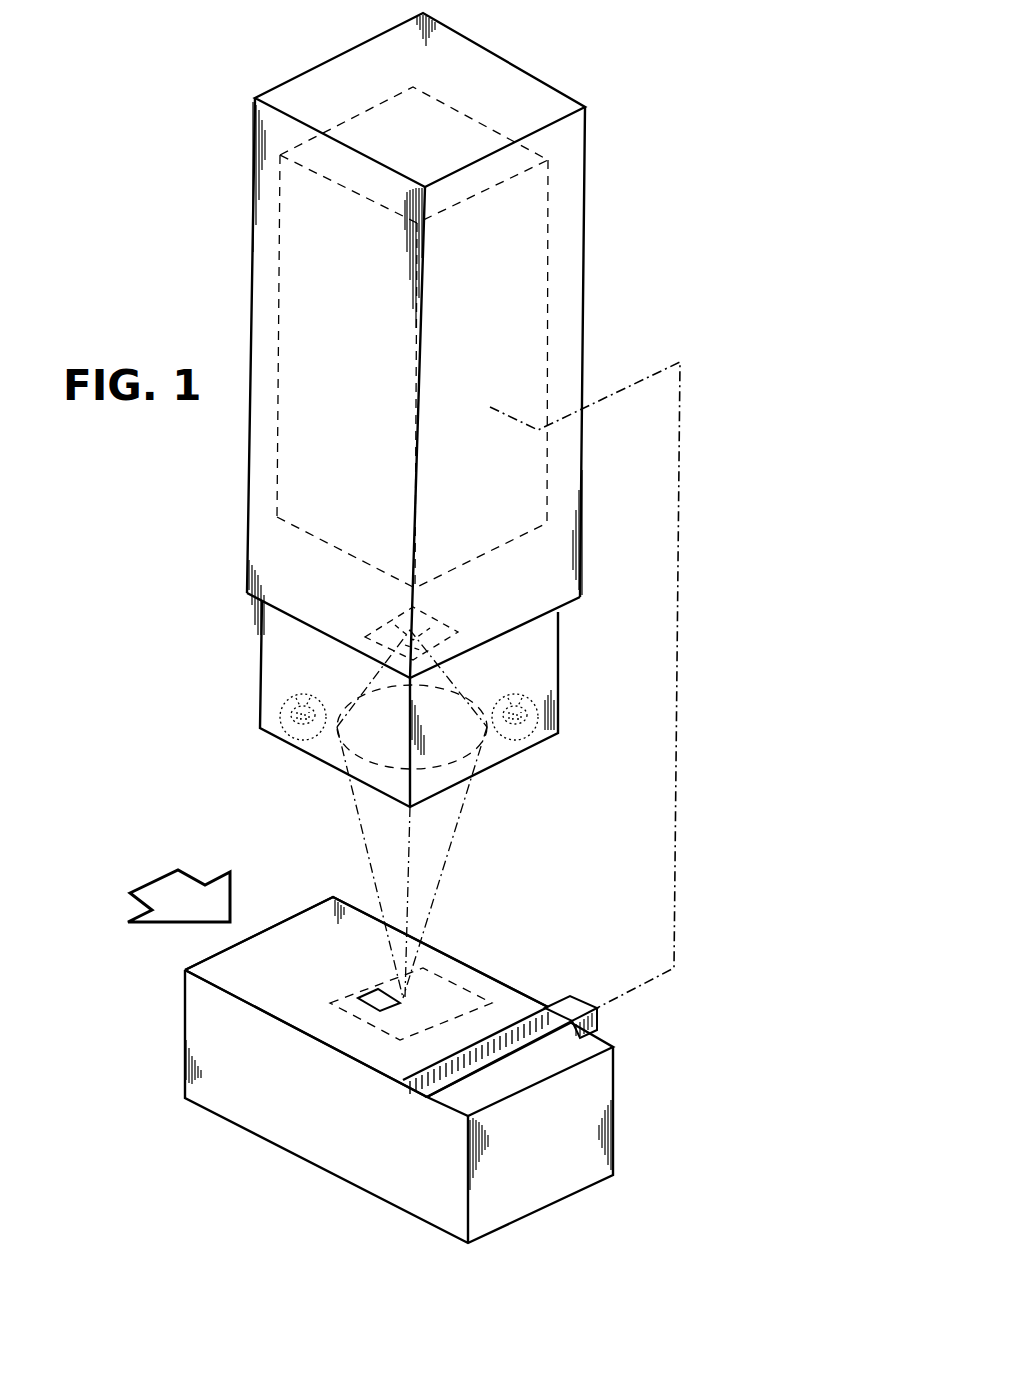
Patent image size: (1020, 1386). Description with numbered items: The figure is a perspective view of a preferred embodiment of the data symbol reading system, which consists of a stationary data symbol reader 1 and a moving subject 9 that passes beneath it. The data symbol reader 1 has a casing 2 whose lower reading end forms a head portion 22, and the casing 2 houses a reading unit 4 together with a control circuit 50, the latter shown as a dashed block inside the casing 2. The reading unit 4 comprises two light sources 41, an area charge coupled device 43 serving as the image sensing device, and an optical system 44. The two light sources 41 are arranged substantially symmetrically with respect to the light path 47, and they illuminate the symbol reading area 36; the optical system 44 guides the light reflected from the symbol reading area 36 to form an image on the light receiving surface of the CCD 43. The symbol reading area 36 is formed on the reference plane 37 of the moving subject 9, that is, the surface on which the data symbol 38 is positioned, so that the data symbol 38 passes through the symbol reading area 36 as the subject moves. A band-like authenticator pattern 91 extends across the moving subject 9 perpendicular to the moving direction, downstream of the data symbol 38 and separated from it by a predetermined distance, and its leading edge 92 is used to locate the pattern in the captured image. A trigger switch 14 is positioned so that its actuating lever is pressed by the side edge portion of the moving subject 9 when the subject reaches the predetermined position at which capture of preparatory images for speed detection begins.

The data symbol reader 1 is at (613, 97).
The casing 2 is at (587, 185).
The control circuit 50 is at (548, 322).
The reading unit 4 is at (292, 676).
The head portion 22 is at (558, 652).
The area charge coupled device (CCD) 43 is at (372, 622).
The optical system 44 is at (365, 760).
The light sources 41 is at (300, 742).
The light path 47 is at (410, 850).
The moving subject 9 is at (300, 1140).
The reference plane 37 is at (322, 1030).
The leading edge 92 is at (420, 1100).
The authenticator pattern 91 is at (525, 1046).
The trigger switch 14 is at (565, 1005).
The symbol reading area 36 is at (460, 985).
The data symbol 38 is at (362, 992).